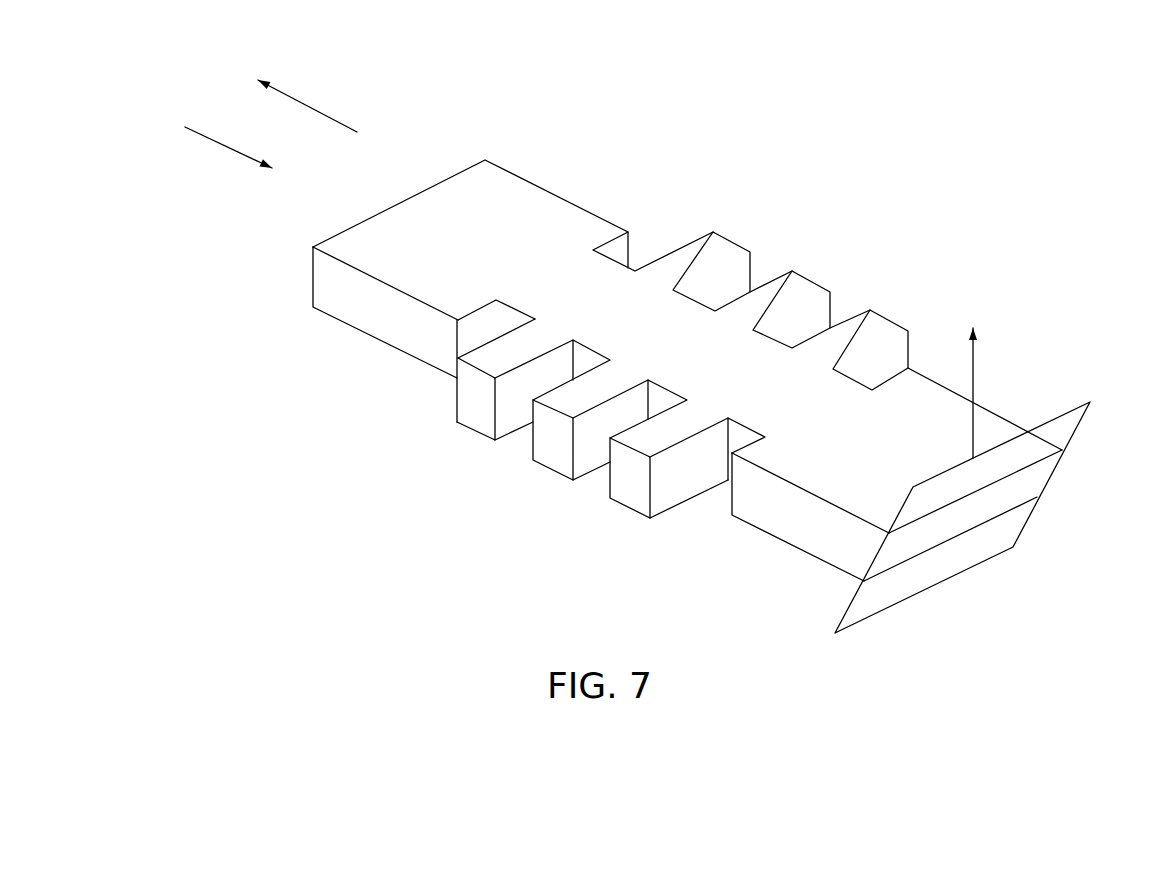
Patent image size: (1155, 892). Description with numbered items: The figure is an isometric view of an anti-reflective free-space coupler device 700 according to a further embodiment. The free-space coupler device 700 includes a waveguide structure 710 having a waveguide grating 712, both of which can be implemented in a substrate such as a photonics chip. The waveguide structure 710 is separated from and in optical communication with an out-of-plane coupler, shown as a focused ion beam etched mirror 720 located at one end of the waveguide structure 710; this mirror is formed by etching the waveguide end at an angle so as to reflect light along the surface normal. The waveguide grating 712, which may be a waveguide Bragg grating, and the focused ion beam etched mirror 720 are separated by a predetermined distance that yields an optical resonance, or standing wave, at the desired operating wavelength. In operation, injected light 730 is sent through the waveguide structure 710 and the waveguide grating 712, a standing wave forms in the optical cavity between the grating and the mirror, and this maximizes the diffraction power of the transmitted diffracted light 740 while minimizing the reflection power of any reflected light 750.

The anti-reflective free-space coupler device 700 is at (446, 479).
The waveguide structure 710 is at (559, 190).
The waveguide grating 712 is at (922, 312).
The focused ion beam etched mirror 720 is at (1046, 485).
The injected light 730 is at (200, 133).
The diffracted light 740 is at (973, 368).
The reflected light 750 is at (340, 122).